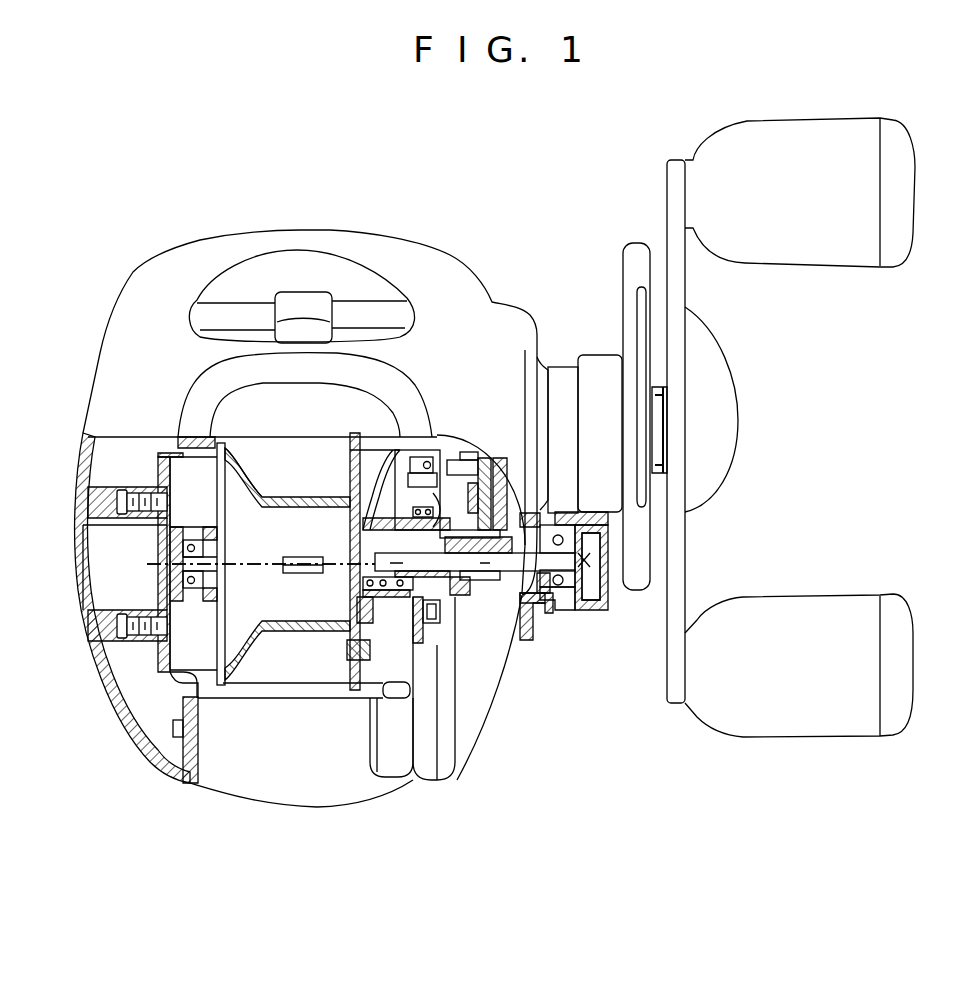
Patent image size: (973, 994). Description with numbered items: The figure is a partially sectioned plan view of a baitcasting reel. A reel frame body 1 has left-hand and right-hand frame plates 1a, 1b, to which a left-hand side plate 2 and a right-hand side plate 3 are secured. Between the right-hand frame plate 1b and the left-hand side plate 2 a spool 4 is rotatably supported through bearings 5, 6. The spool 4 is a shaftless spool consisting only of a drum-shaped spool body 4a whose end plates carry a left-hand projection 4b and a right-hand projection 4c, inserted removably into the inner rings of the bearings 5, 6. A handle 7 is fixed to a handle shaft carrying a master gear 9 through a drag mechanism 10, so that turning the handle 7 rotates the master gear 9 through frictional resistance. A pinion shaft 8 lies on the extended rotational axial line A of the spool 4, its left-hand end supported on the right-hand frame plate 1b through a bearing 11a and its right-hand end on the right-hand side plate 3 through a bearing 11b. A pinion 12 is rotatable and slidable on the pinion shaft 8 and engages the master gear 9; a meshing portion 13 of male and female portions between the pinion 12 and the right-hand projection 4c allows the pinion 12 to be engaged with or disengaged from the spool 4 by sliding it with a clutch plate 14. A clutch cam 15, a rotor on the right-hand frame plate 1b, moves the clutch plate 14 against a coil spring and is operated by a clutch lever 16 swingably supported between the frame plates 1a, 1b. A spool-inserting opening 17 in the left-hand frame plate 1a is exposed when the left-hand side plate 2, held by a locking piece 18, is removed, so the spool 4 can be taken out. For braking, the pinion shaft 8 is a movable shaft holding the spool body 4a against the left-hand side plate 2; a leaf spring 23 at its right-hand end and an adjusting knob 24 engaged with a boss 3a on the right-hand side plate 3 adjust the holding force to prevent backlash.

The reel frame body 1 is at (427, 785).
The left-hand frame plate 1a is at (190, 780).
The right-hand frame plate 1b is at (437, 750).
The left-hand side plate 2 is at (110, 713).
The right-hand side plate 3 is at (490, 733).
The boss 3a is at (600, 528).
The spool 4 is at (248, 697).
The spool body 4a is at (268, 490).
The left-hand projection 4b is at (165, 582).
The right-hand projection 4c is at (353, 577).
The bearing 5 is at (175, 532).
The bearing 6 is at (373, 477).
The handle 7 is at (680, 583).
The pinion shaft 8 is at (481, 565).
The master gear 9 is at (493, 567).
The drag mechanism 10 is at (520, 483).
The bearing 11a is at (380, 640).
The bearing 11b is at (553, 613).
The pinion 12 is at (470, 530).
The meshing portion 13 is at (340, 660).
The clutch plate 14 is at (443, 593).
The clutch cam 15 is at (450, 600).
The clutch lever 16 is at (280, 790).
The spool-inserting opening 17 is at (165, 668).
The locking piece 18 is at (178, 703).
The leaf spring 23 is at (605, 610).
The adjusting knob 24 is at (610, 595).
The rotational axial line A is at (251, 568).